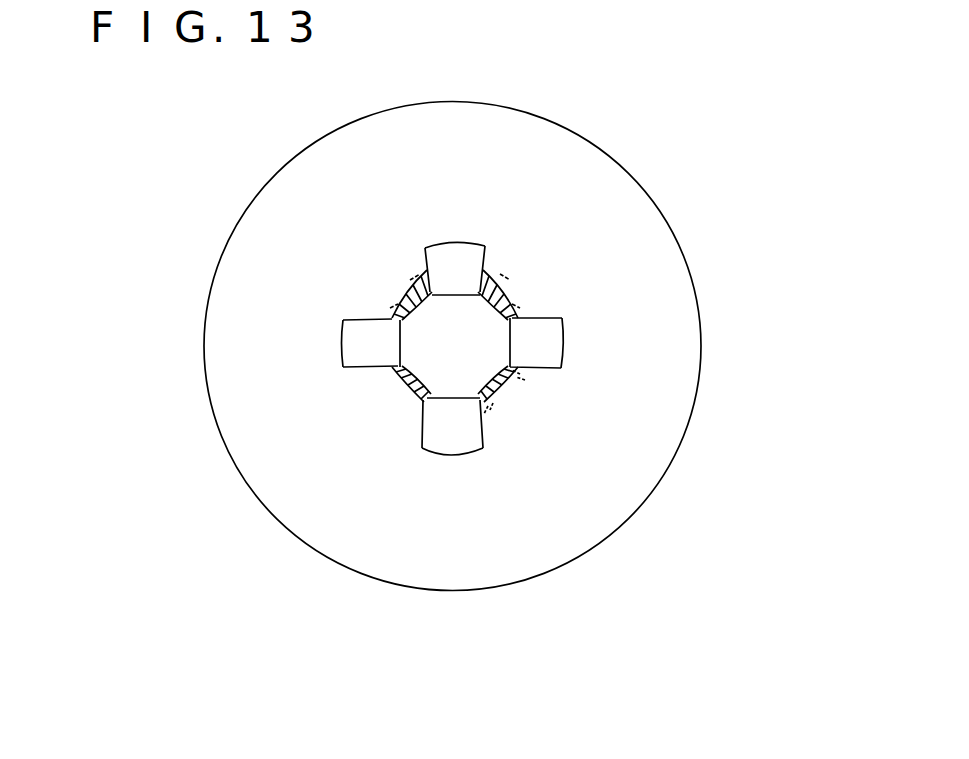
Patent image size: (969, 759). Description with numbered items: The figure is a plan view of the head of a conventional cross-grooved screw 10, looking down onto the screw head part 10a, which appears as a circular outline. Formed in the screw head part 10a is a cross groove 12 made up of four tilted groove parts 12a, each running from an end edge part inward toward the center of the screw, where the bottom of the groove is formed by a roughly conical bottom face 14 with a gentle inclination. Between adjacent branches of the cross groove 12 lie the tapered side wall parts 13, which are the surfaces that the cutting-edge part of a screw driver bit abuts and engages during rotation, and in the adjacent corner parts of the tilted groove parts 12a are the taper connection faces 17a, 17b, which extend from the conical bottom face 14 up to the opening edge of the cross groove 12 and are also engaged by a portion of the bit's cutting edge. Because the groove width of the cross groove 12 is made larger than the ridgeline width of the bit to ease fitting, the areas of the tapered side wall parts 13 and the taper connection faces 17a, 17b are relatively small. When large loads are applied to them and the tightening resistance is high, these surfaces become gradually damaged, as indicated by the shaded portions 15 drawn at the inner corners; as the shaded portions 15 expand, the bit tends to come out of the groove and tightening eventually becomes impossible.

The screw 10 is at (203, 313).
The screw head part 10a is at (635, 212).
The cross groove 12 is at (463, 252).
The tilted groove part 12a is at (436, 257).
The tapered side wall part 13 is at (483, 257).
The conical bottom face 14 is at (453, 372).
The shaded portions 15 is at (403, 292).
The taper connection face 17a is at (507, 384).
The taper connection face 17b is at (500, 387).